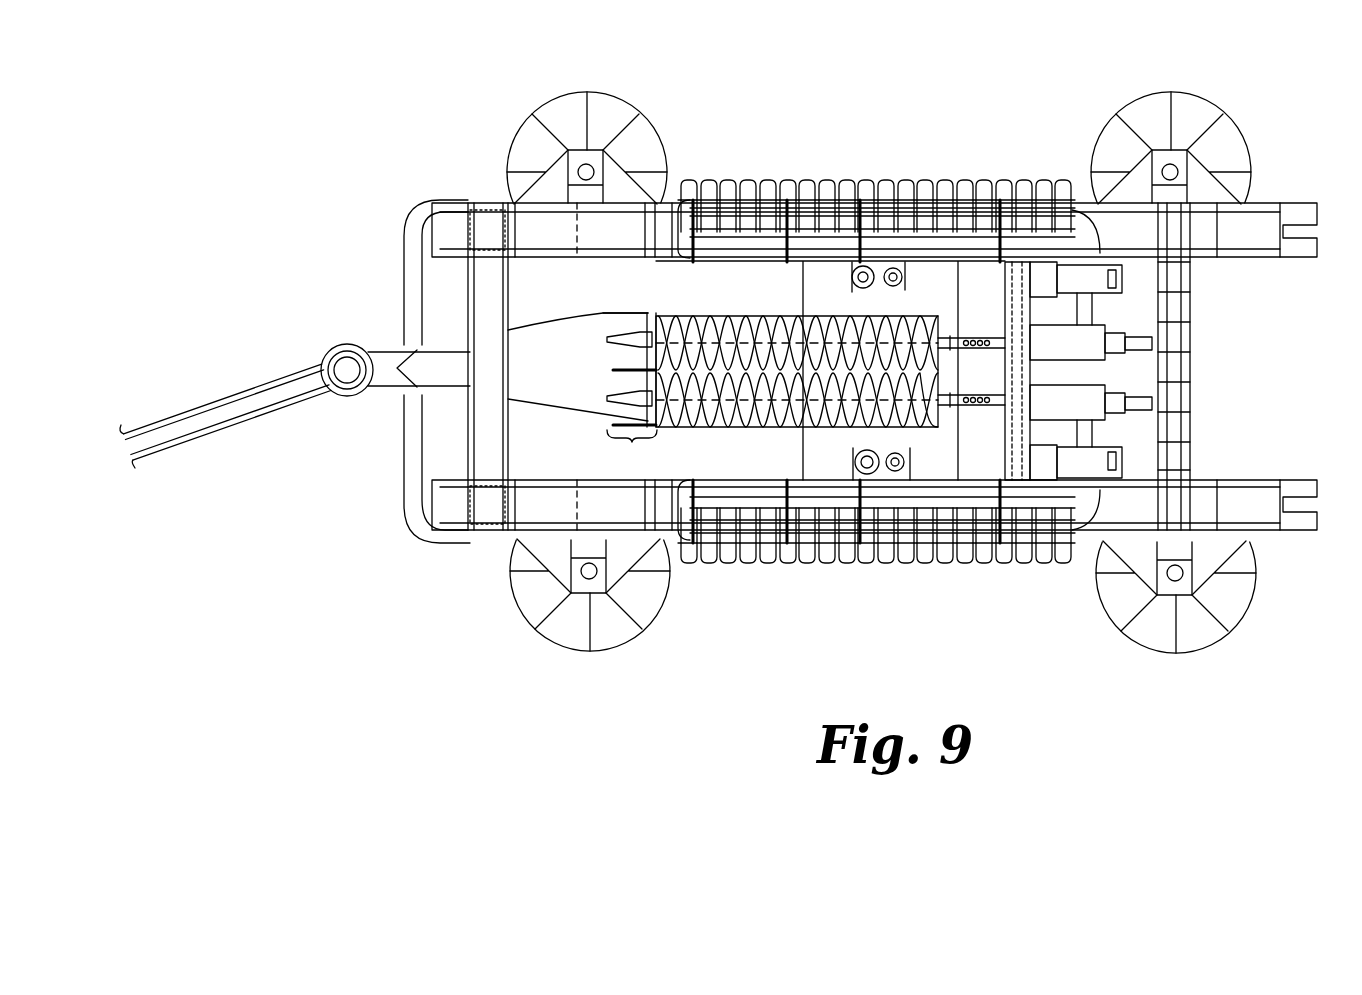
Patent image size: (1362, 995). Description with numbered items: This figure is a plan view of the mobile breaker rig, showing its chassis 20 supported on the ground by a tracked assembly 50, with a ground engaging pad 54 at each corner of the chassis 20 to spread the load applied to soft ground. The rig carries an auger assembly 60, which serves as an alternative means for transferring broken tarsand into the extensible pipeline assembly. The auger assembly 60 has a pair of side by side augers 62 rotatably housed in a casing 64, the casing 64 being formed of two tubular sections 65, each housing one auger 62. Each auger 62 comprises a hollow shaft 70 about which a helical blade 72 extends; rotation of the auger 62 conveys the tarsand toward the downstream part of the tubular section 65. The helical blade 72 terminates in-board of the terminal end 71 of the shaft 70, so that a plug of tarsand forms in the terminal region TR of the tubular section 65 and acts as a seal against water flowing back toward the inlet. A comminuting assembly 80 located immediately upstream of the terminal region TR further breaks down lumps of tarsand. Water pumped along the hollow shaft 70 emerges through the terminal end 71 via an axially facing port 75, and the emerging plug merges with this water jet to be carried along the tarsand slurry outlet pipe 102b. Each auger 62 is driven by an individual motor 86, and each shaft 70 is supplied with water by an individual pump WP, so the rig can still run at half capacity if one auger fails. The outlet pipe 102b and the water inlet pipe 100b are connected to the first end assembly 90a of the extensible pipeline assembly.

The chassis 20 is at (500, 507).
The tracked assembly 50 is at (890, 186).
The ground engaging pad 54 is at (653, 142).
The auger assembly 60 is at (548, 347).
The auger 62 is at (680, 327).
The casing 64 is at (553, 310).
The tubular section 65 is at (630, 320).
The hollow shaft 70 is at (795, 337).
The terminal end 71 is at (625, 318).
The helical blade 72 is at (813, 325).
The axially facing port 75 is at (620, 342).
The comminuting assembly 80 is at (636, 354).
The motor 86 is at (1143, 327).
The first end assembly 90a is at (190, 395).
The water inlet pipe 100b is at (398, 282).
The tarsand slurry outlet pipe 102b is at (410, 343).
The terminal region TR is at (632, 450).
The pump WP is at (1113, 277).